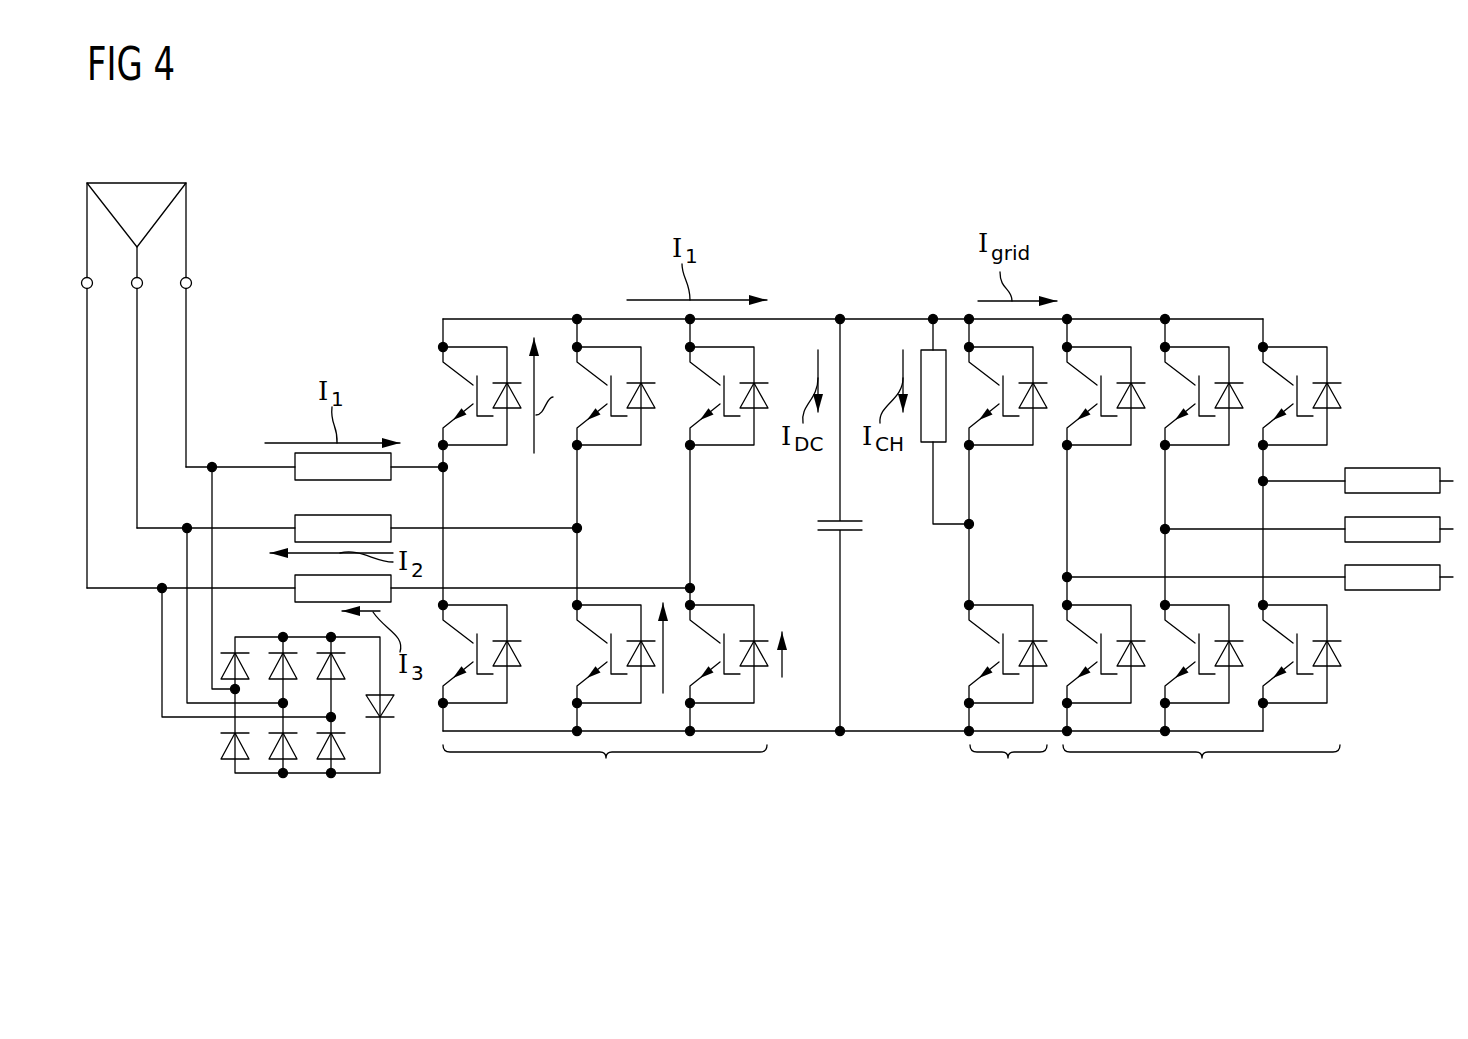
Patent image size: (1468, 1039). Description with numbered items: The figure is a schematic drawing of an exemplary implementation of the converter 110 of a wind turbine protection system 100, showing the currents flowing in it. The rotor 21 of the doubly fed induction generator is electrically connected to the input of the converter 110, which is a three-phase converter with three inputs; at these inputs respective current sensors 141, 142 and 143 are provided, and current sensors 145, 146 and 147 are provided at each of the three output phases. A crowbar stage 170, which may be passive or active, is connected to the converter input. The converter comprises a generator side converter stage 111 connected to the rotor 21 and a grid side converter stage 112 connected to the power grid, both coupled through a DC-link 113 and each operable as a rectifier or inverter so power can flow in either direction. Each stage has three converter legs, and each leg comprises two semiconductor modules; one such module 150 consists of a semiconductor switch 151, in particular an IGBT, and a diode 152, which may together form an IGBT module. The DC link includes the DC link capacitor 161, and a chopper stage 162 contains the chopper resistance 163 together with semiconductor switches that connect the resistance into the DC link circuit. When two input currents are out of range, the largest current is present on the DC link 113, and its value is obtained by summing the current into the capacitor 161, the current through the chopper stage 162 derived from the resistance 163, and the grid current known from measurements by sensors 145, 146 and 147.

The rotor 21 is at (135, 183).
The protection system 100 is at (1222, 173).
The converter 110 is at (860, 770).
The generator side converter stage 111 is at (611, 554).
The grid side converter stage 112 is at (1202, 554).
The DC-link 113 is at (838, 300).
The current sensor 141 is at (295, 460).
The current sensor 142 is at (295, 518).
The current sensor 143 is at (295, 576).
The current sensor 145 is at (1393, 468).
The current sensor 146 is at (1345, 525).
The current sensor 147 is at (1393, 590).
The switch module 150 is at (452, 390).
The semiconductor switch 151 is at (475, 397).
The diode 152 is at (510, 410).
The DC link capacitor 161 is at (849, 532).
The chopper stage 162 is at (1006, 554).
The chopper resistance 163 is at (935, 450).
The crowbar stage 170 is at (295, 792).